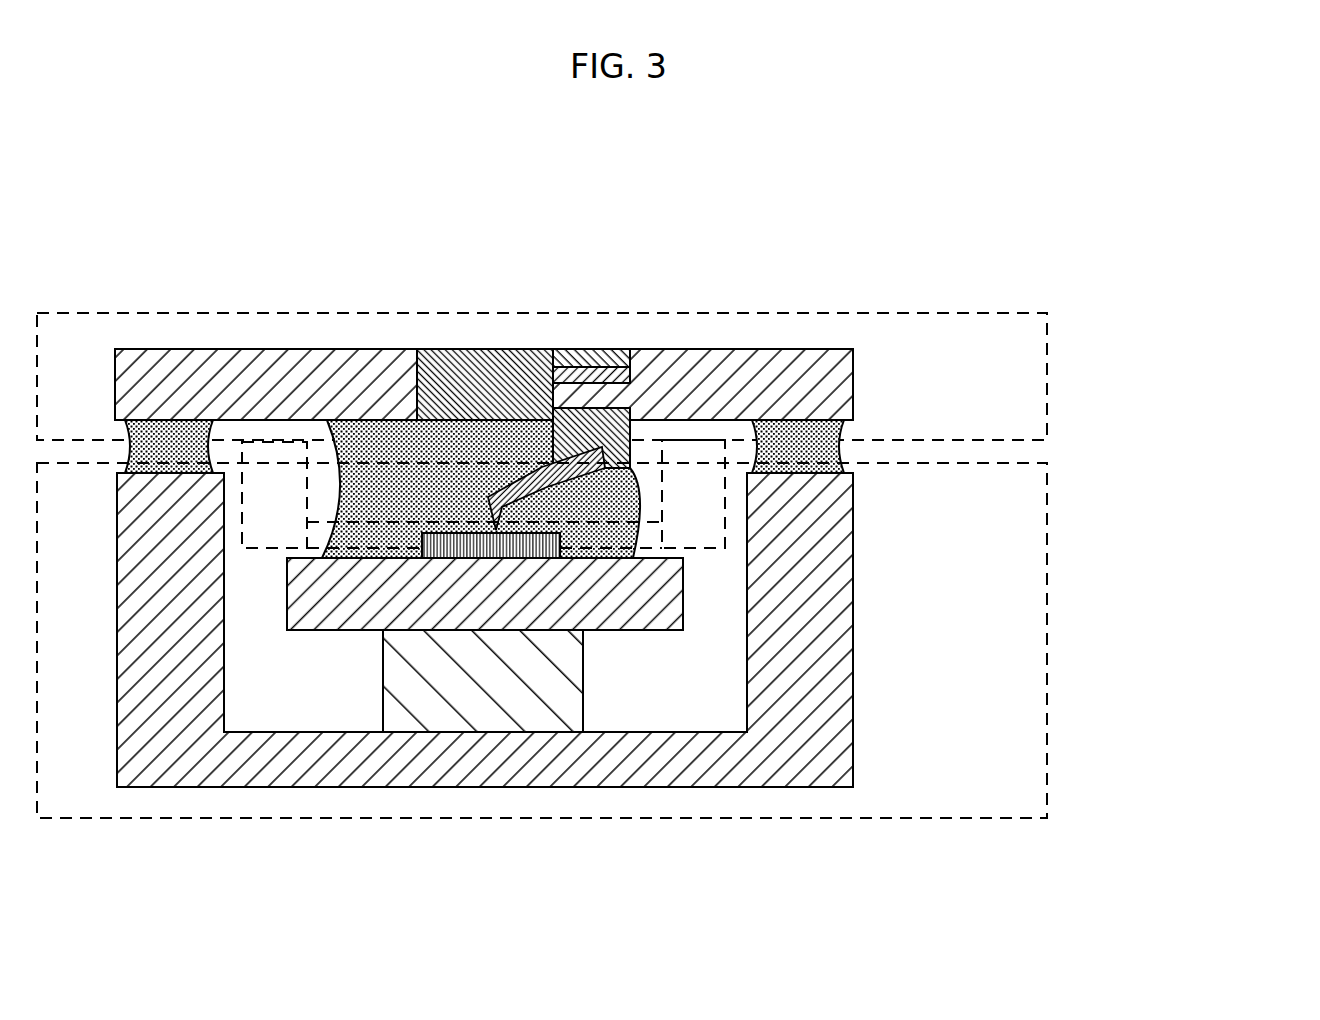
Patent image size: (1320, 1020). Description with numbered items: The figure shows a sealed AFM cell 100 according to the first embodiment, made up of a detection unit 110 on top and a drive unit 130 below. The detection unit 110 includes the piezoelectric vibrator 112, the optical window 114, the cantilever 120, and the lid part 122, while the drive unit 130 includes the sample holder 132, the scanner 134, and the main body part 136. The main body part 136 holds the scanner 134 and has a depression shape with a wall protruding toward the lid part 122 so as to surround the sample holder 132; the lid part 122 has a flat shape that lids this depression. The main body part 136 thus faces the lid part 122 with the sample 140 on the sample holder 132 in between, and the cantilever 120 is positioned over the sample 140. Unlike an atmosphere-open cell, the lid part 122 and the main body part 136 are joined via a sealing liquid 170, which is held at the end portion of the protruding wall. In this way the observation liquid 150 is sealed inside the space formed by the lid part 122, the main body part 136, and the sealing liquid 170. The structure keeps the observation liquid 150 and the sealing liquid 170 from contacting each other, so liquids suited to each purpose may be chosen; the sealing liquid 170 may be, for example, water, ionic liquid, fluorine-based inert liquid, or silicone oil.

The sealed AFM cell 100 is at (1188, 444).
The detection unit 110 is at (1030, 313).
The piezoelectric vibrator 112 is at (630, 377).
The optical window 114 is at (508, 352).
The cantilever 120 is at (560, 493).
The lid part 122 is at (772, 358).
The drive unit 130 is at (1047, 492).
The sample holder 132 is at (662, 590).
The scanner 134 is at (560, 678).
The main body part 136 is at (140, 657).
The sample 140 is at (437, 542).
The observation liquid 150 is at (385, 450).
The sealing liquid 170 is at (125, 430).